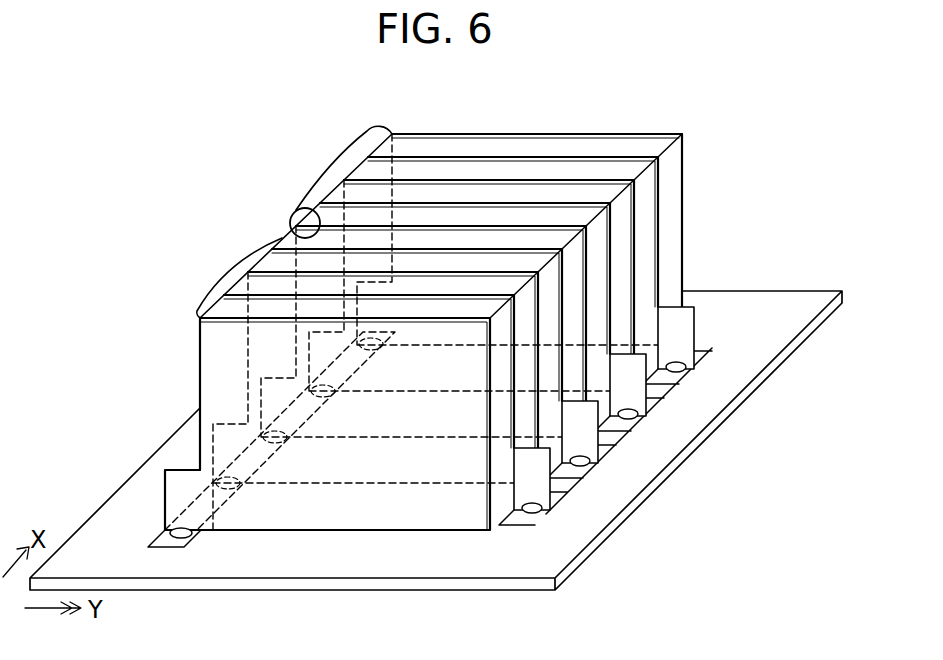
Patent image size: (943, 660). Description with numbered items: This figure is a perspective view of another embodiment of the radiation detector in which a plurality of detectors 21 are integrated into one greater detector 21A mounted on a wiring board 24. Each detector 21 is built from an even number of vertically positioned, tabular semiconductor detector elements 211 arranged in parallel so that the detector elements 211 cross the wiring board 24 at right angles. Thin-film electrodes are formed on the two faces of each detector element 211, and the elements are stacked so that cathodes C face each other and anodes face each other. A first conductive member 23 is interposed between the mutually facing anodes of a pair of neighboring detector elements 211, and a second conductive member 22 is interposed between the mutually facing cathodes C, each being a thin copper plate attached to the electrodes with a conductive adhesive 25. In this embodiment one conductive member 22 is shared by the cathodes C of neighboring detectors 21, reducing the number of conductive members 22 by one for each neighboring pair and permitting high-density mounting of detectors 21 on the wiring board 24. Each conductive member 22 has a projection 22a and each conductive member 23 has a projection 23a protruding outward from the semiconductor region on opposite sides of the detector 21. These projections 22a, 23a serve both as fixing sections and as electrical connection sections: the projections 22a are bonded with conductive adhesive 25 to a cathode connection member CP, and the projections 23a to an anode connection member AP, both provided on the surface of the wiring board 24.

The detector 21 is at (331, 168).
The greater detector 21A is at (467, 351).
The conductive member 22 is at (461, 226).
The projection 22a is at (183, 480).
The conductive member 23 is at (533, 157).
The projection 23a is at (541, 480).
The wiring board 24 is at (757, 291).
The conductive adhesive 25 is at (173, 534).
The detector element 211 is at (671, 177).
The cathode C is at (291, 218).
The anode connection member AP is at (533, 514).
The cathode connection member CP is at (178, 541).